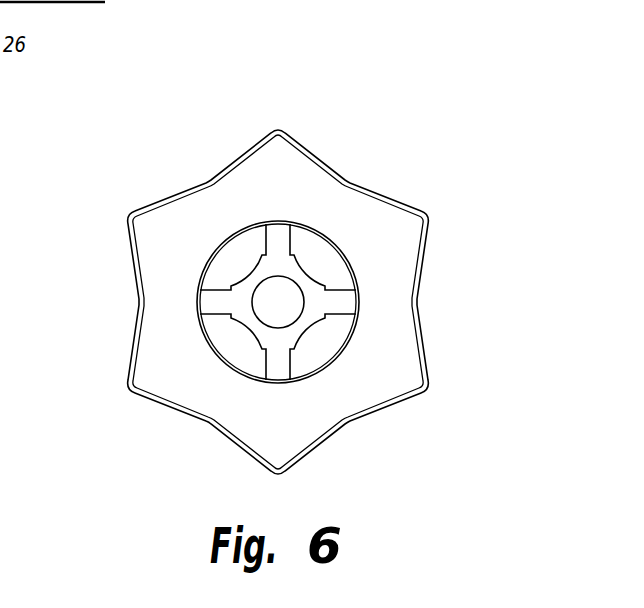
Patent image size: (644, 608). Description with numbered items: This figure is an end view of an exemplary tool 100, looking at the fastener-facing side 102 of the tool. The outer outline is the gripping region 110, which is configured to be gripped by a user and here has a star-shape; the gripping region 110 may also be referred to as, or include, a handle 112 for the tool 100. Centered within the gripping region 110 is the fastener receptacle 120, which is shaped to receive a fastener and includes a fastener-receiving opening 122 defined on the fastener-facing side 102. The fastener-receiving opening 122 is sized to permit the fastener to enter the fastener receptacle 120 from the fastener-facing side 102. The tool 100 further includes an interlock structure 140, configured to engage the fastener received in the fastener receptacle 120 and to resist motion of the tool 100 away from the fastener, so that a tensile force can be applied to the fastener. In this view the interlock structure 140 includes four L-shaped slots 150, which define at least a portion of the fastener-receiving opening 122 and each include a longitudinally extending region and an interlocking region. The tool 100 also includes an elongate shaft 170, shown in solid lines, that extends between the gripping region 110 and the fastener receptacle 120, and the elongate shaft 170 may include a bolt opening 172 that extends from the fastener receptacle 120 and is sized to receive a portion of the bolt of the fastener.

The tool 100 is at (448, 92).
The fastener-facing side 102 is at (220, 332).
The gripping region 110 is at (138, 300).
The handle 112 is at (128, 340).
The fastener receptacle 120 is at (323, 328).
The fastener-receiving opening 122 is at (314, 316).
The interlock structure 140 is at (212, 243).
The L-shaped slot 150 is at (282, 224).
The elongate shaft 170 is at (243, 381).
The bolt opening 172 is at (317, 272).